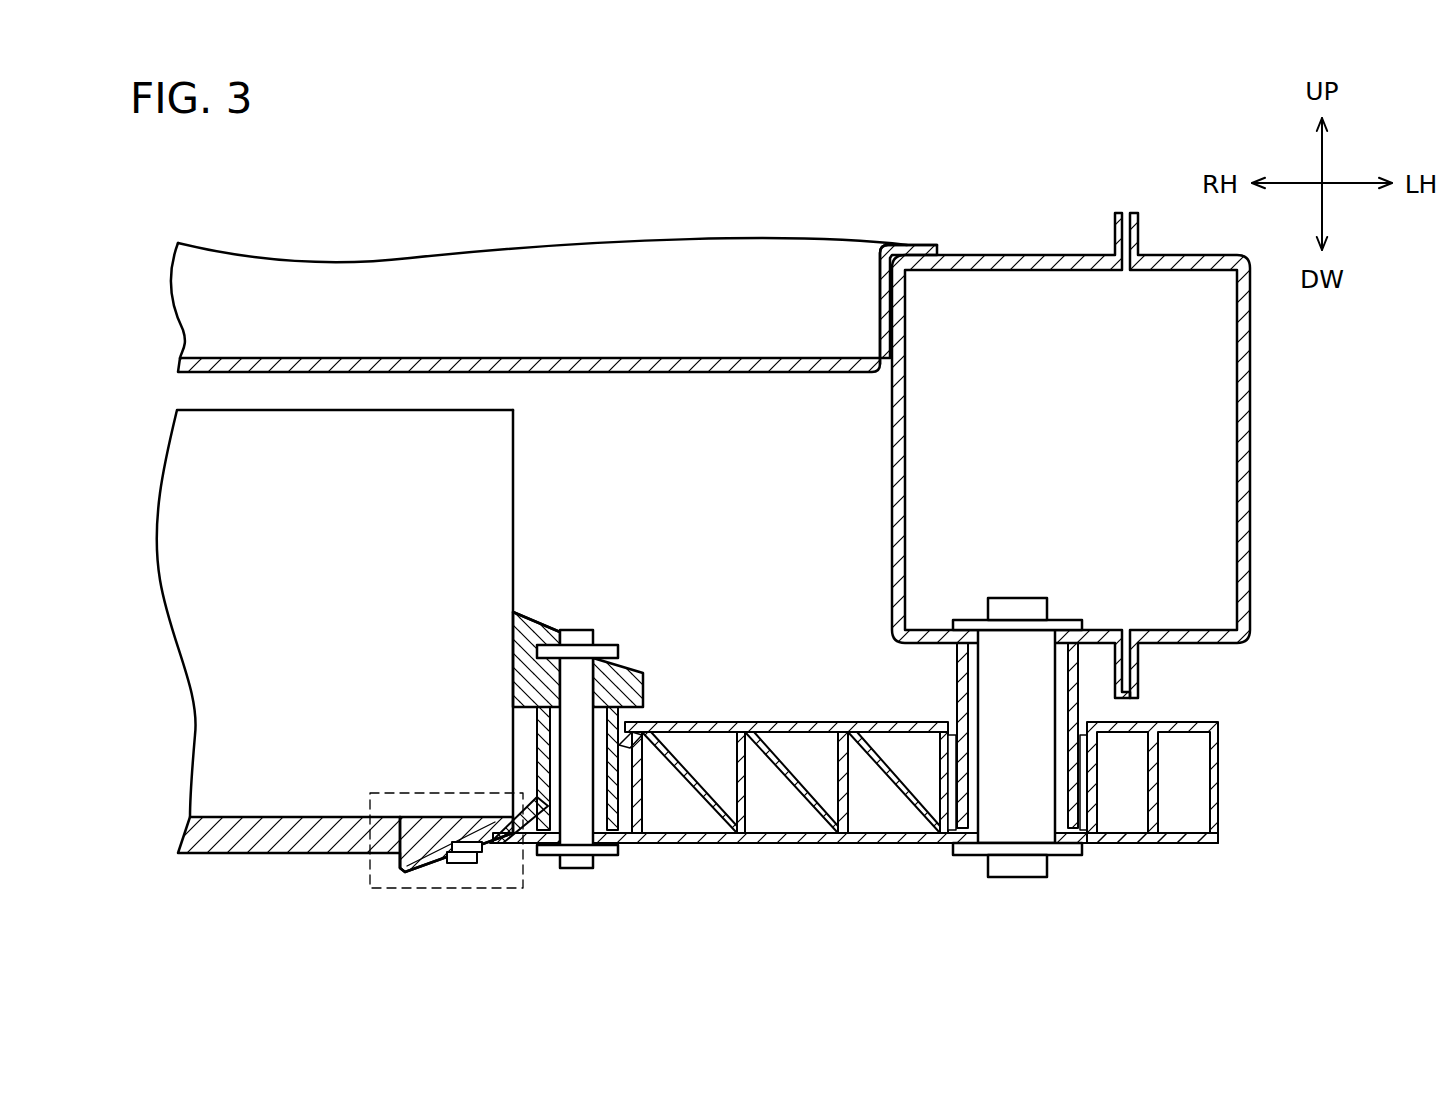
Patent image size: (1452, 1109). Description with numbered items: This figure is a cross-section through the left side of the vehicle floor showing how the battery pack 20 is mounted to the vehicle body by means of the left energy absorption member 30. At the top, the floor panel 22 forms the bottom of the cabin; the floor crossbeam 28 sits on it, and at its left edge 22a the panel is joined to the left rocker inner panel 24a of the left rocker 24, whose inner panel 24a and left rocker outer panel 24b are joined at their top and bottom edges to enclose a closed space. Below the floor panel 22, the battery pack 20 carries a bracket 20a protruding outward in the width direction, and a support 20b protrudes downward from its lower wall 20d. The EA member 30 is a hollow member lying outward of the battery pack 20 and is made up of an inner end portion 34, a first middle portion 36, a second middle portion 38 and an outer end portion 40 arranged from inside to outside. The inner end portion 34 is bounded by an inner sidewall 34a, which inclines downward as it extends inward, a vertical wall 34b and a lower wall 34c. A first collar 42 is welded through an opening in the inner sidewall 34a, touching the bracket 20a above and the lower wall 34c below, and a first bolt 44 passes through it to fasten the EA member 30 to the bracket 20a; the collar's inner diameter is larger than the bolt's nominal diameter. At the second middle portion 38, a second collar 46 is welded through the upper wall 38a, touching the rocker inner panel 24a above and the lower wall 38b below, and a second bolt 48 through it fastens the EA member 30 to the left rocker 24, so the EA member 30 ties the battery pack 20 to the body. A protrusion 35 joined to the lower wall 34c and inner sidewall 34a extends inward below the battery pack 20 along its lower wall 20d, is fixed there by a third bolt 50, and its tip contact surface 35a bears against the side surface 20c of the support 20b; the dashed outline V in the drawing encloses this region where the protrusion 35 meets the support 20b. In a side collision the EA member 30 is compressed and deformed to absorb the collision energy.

The battery pack 20 is at (343, 689).
The bracket 20a is at (527, 647).
The support 20b is at (213, 855).
The side surface 20c is at (407, 824).
The lower wall 20d is at (428, 832).
The floor panel 22 is at (501, 261).
The left edge 22a is at (882, 300).
The left rocker 24 is at (1071, 384).
The left rocker inner panel 24a is at (1025, 258).
The left rocker outer panel 24b is at (1183, 262).
The floor crossbeam 28 is at (727, 262).
The left energy absorption member 30 is at (1275, 719).
The inner end portion 34 is at (580, 800).
The inner sidewall 34a is at (497, 845).
The vertical wall 34b is at (640, 758).
The lower wall 34c is at (530, 836).
The protrusion 35 is at (403, 874).
The contact surface 35a is at (398, 862).
The first middle portion 36 is at (855, 792).
The second middle portion 38 is at (1033, 791).
The upper wall 38a is at (950, 717).
The lower wall 38b is at (970, 837).
The outer end portion 40 is at (1192, 912).
The first collar 42 is at (633, 765).
The first bolt 44 is at (585, 798).
The second collar 46 is at (1073, 757).
The second bolt 48 is at (1030, 782).
The third bolt 50 is at (462, 864).
The region V is at (370, 800).